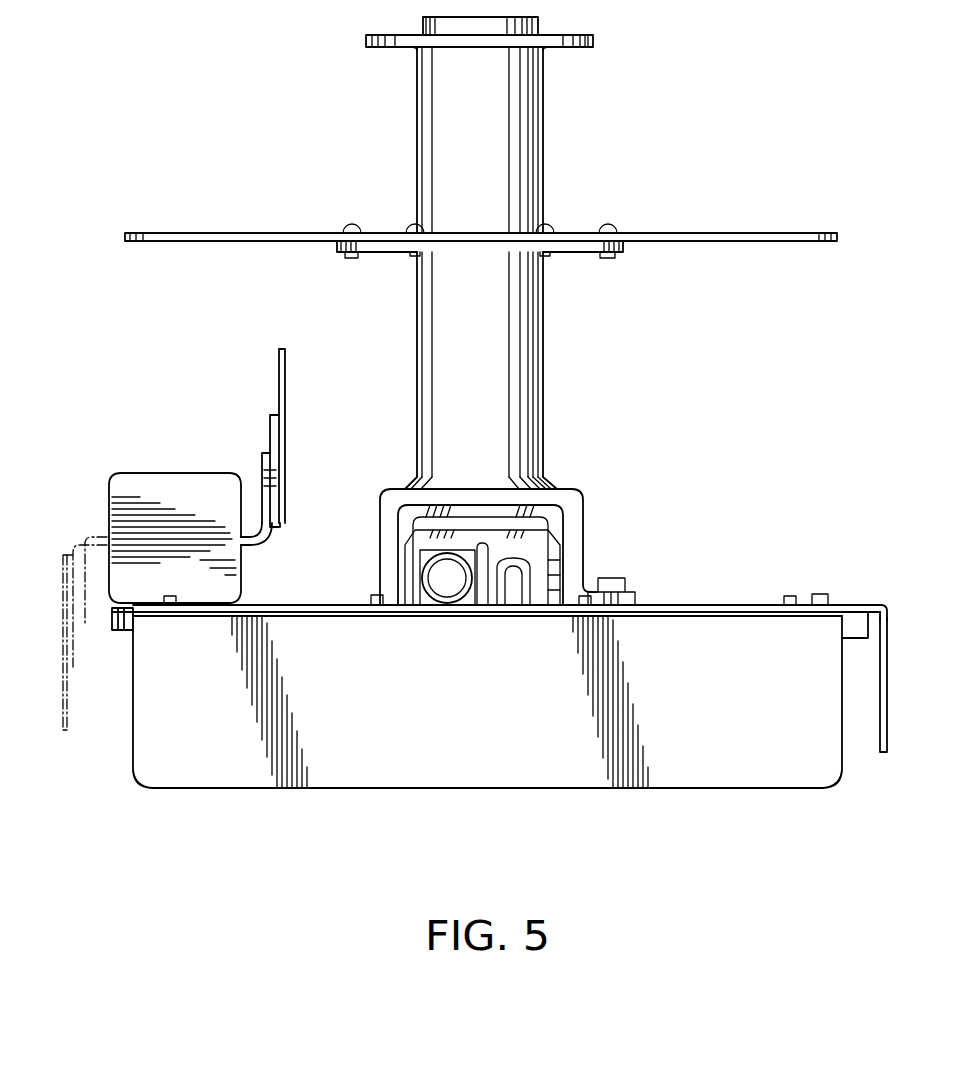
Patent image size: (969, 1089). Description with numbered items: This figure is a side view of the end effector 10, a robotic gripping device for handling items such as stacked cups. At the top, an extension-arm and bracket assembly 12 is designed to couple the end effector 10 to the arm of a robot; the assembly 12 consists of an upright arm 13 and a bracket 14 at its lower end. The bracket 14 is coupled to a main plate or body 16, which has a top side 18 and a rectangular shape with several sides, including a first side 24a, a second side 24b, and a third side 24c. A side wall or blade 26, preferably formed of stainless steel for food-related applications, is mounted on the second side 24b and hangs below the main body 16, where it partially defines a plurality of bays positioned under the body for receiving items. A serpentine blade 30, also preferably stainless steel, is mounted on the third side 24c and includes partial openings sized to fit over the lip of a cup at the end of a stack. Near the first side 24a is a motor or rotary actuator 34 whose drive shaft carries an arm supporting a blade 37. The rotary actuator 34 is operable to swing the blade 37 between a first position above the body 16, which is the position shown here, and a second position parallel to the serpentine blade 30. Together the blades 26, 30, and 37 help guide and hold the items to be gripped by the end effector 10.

The end effector 10 is at (268, 126).
The extension-arm and bracket assembly 12 is at (630, 321).
The arm 13 is at (490, 136).
The bracket 14 is at (570, 497).
The main plate or body 16 is at (862, 617).
The top side 18 is at (675, 607).
The first side 24a is at (95, 617).
The second side 24b is at (127, 621).
The third side 24c is at (883, 623).
The side wall or blade 26 is at (493, 710).
The serpentine blade 30 is at (890, 742).
The motor or rotary actuator 34 is at (215, 518).
The blade 37 is at (287, 398).